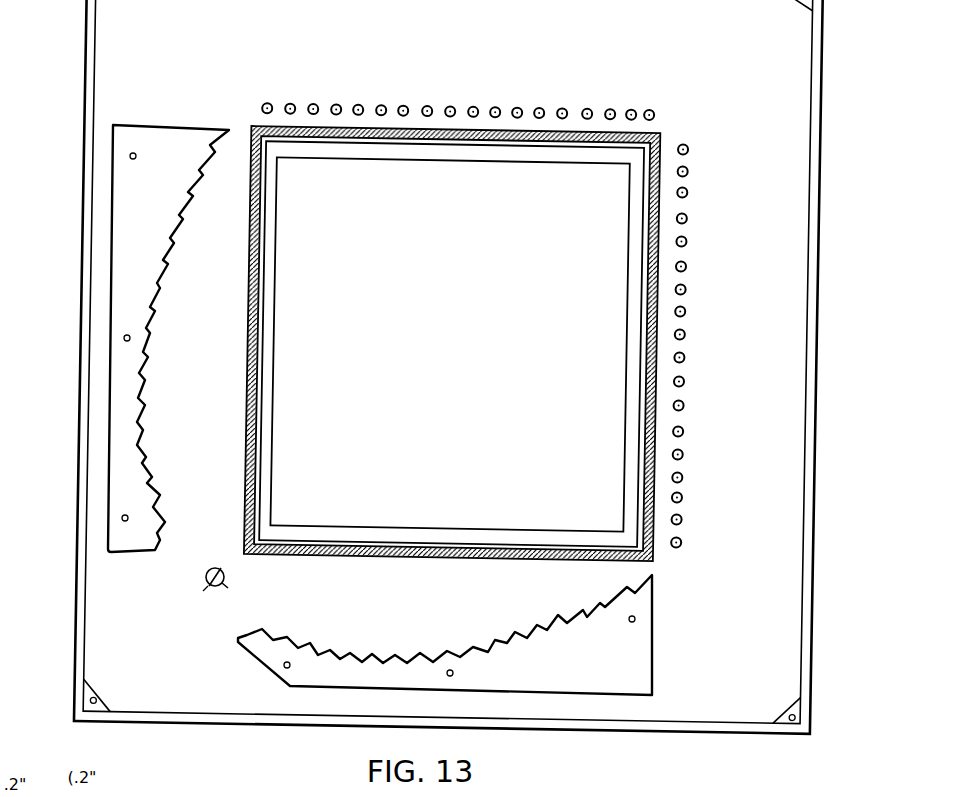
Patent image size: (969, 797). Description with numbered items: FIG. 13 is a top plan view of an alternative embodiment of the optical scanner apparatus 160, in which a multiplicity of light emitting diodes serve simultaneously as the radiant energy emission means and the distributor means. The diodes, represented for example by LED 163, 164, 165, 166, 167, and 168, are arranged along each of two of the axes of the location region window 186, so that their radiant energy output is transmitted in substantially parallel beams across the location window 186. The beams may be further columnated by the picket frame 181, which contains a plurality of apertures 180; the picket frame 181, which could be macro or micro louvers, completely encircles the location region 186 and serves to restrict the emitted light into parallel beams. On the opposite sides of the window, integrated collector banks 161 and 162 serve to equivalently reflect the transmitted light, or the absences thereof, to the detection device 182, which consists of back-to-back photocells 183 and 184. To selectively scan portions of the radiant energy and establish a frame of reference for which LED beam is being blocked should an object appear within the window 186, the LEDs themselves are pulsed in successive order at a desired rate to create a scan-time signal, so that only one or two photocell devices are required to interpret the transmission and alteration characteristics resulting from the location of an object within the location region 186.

The panel assembly 160 is at (70, 373).
The integrated collector bank 161 is at (134, 142).
The integrated collector bank 162 is at (607, 672).
The LED 163 is at (686, 149).
The LED 164 is at (686, 174).
The LED 165 is at (684, 544).
The LED 166 is at (652, 110).
The LED 167 is at (629, 107).
The LED 168 is at (267, 98).
The aperture 180 is at (655, 563).
The picket frame 181 is at (657, 227).
The detection device 182 is at (207, 587).
The photocell 183 is at (226, 585).
The photocell 184 is at (214, 566).
The location region window 186 is at (582, 464).